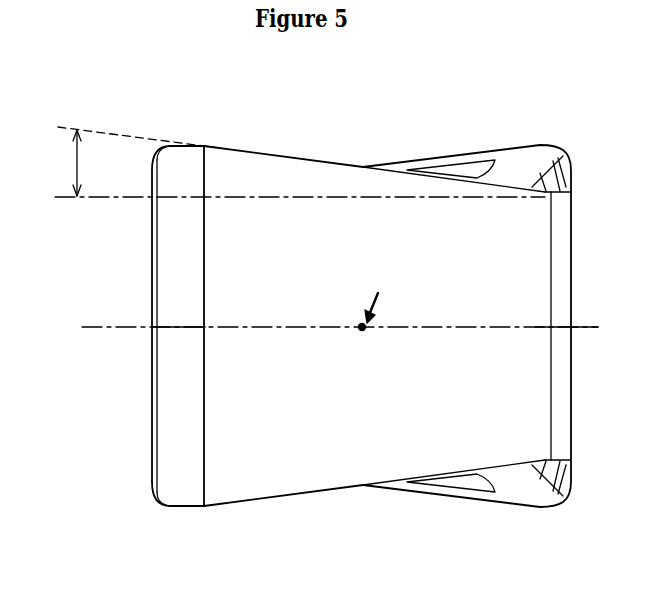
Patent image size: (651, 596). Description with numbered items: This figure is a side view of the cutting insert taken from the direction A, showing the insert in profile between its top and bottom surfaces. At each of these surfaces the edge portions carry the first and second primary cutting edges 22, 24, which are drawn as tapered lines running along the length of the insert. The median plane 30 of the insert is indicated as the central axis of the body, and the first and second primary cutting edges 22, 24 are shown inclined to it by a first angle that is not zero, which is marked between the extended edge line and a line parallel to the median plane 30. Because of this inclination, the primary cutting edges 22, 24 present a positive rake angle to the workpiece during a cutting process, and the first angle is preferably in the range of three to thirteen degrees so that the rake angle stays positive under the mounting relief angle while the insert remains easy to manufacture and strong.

The first primary cutting edge 22 is at (302, 158).
The second primary cutting edge 24 is at (462, 153).
The median plane 30 is at (95, 323).